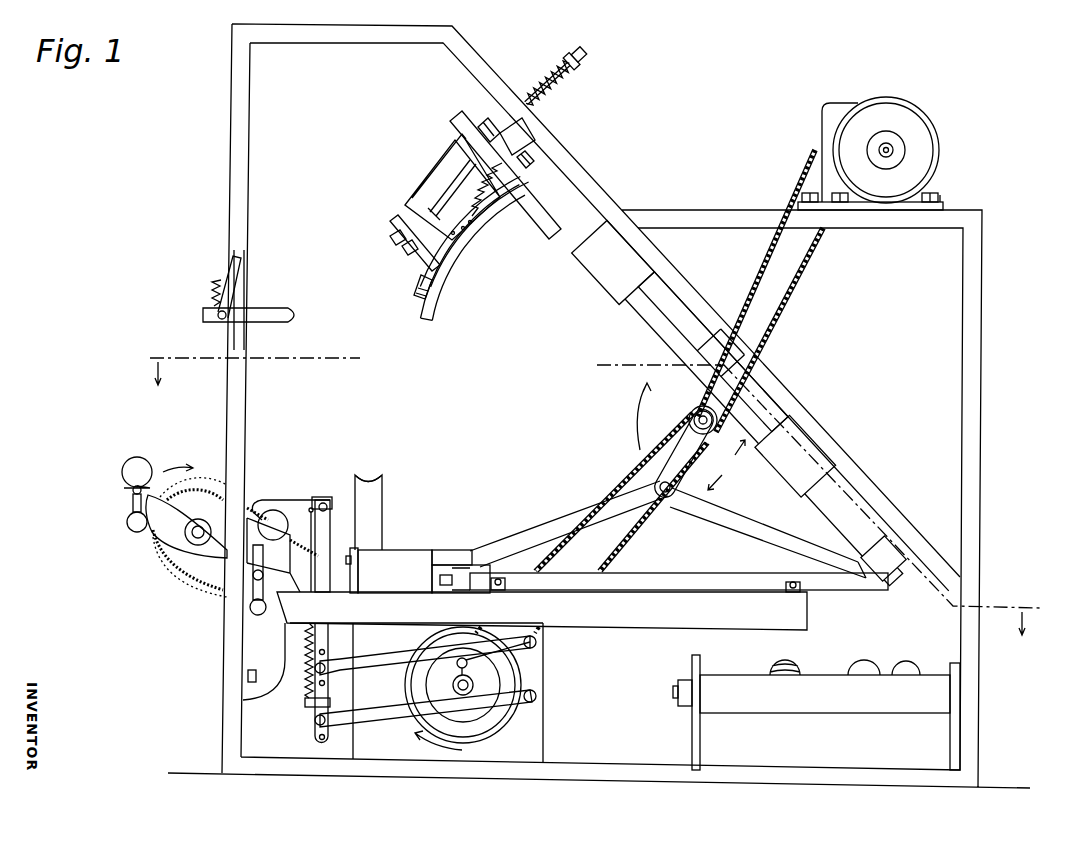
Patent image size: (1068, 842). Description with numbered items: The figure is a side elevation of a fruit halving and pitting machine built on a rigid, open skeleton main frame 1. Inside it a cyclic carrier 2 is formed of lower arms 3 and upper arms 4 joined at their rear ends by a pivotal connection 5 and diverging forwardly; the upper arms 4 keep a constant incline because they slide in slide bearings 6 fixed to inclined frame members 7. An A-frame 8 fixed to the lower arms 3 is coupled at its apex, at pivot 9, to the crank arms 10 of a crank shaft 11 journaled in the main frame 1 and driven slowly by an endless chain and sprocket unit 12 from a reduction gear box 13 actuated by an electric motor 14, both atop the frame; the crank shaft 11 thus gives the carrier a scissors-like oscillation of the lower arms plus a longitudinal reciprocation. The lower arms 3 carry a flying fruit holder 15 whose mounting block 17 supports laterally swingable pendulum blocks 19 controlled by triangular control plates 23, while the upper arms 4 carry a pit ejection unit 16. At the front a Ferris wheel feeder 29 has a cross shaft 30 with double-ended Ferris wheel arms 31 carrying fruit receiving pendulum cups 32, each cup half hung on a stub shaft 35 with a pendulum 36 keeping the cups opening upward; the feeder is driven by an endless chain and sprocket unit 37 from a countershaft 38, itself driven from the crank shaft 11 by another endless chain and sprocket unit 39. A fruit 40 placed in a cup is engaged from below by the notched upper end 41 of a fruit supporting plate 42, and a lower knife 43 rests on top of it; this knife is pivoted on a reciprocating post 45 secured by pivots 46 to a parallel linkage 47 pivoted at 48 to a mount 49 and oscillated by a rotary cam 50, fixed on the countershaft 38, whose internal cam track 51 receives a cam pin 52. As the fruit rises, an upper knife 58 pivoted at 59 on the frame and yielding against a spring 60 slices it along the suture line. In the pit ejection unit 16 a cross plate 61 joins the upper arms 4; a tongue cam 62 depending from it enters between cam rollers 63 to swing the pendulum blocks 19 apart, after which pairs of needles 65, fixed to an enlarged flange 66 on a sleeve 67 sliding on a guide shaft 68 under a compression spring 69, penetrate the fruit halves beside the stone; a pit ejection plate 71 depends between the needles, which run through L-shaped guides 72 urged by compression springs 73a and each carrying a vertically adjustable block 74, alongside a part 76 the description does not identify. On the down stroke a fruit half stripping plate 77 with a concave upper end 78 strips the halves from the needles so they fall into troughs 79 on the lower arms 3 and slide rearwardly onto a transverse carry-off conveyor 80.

The main frame 1 is at (999, 351).
The cyclic carrier 2 is at (607, 503).
The lower arms 3 is at (680, 582).
The upper arms 4 is at (653, 320).
The pivotal connection 5 is at (594, 492).
The slide bearings 6 is at (602, 270).
The frame members 7 is at (790, 405).
The A-frame 8 is at (745, 522).
The pivotal coupling 9 is at (667, 495).
The crank arms 10 is at (675, 458).
The crank shaft 11 is at (690, 418).
The endless chain and sprocket unit 12 is at (812, 260).
The reduction gear box 13 is at (833, 112).
The electric motor 14 is at (925, 143).
The fruit holder 15 is at (253, 592).
The pit ejection unit 16 is at (456, 199).
The mounting block 17 is at (452, 555).
The pendulum blocks 19 is at (405, 560).
The control plate 23 is at (428, 590).
The Ferris wheel feeder 29 is at (175, 537).
The cross shaft 30 is at (185, 550).
The Ferris wheel arms 31 is at (165, 528).
The fruit receiving pendulum cups 32 is at (115, 498).
The stub shaft 35 is at (130, 493).
The pendulum 36 is at (127, 524).
The endless chain and sprocket unit 37 is at (190, 583).
The countershaft 38 is at (450, 690).
The endless chain and sprocket unit 39 is at (604, 483).
The fruit 40 is at (133, 462).
The notched upper end 41 is at (260, 540).
The fruit supporting plate 42 is at (262, 655).
The lower knife 43 is at (300, 500).
The reciprocating post 45 is at (325, 637).
The pivots 46 is at (318, 700).
The parallel linkage 47 is at (387, 660).
The pivots 48 is at (548, 645).
The mount 49 is at (548, 697).
The rotary cam 50 is at (490, 735).
The internal cam track 51 is at (540, 715).
The cam pin 52 is at (460, 660).
The upper knife 58 is at (265, 308).
The pivot 59 is at (218, 320).
The spring 60 is at (213, 292).
The cross plate 61 is at (530, 162).
The tongue cam 62 is at (447, 280).
The cam rollers 63 is at (362, 555).
The needles 65 is at (404, 250).
The enlarged flange 66 is at (508, 146).
The sleeve 67 is at (512, 130).
The guide shaft 68 is at (575, 68).
The compression spring 69 is at (560, 95).
The pit ejection plate 71 is at (447, 165).
The L-shaped guides 72 is at (420, 250).
The compression springs 73a is at (494, 214).
The vertically adjustable block 74 is at (424, 288).
The cutter blade 76 is at (450, 185).
The fruit half stripping plate 77 is at (372, 503).
The concave upper end 78 is at (368, 478).
The troughs 79 is at (655, 632).
The carry-off conveyor 80 is at (827, 708).